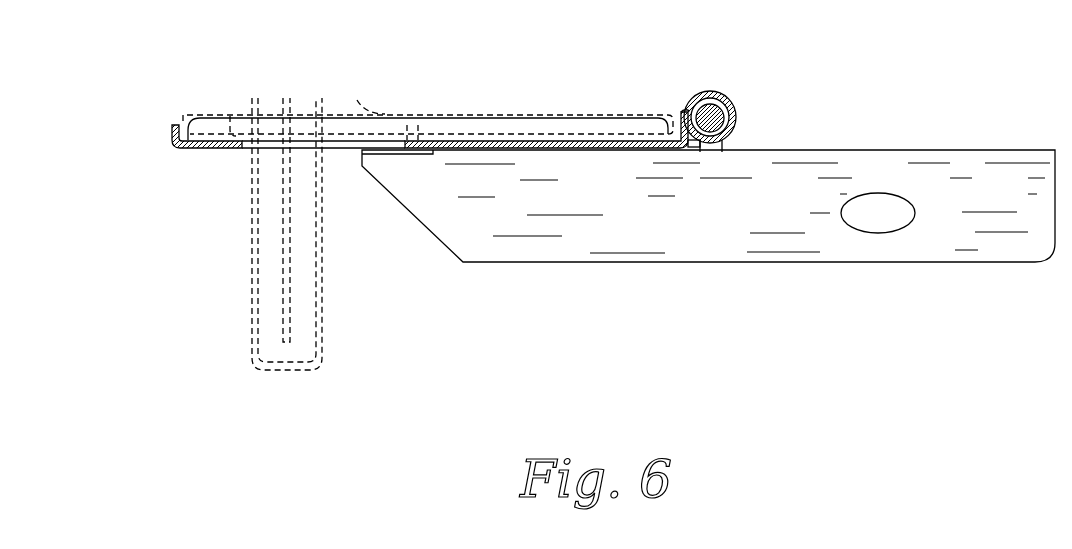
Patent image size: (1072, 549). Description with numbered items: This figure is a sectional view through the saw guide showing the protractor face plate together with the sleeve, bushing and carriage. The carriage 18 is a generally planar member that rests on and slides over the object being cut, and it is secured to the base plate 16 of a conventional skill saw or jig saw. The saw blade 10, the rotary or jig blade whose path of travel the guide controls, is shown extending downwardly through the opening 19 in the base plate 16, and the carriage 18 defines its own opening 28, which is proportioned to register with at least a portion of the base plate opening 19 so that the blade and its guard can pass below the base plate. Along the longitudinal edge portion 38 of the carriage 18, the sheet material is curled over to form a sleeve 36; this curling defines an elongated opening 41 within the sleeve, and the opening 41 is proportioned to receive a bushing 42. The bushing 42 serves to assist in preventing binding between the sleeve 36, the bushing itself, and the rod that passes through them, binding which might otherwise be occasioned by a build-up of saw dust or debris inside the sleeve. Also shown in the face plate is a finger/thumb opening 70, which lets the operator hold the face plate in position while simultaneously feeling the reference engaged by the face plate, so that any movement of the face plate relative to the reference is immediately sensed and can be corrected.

The saw blade 10 is at (290, 268).
The base plate 16 is at (473, 115).
The carriage 18 is at (523, 147).
The opening in base plate 19 is at (403, 132).
The carriage opening 28 is at (395, 148).
The sleeve 36 is at (733, 138).
The longitudinal edge portion 38 is at (717, 87).
The elongated opening 41 is at (683, 110).
The bushing 42 is at (736, 118).
The finger/thumb opening 70 is at (900, 229).